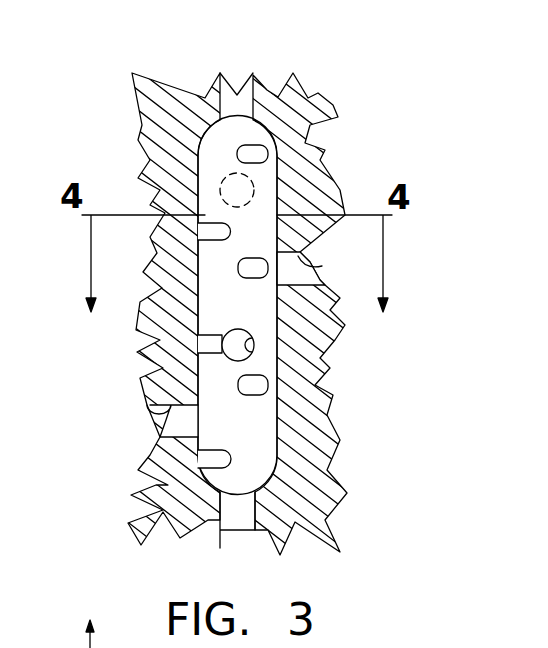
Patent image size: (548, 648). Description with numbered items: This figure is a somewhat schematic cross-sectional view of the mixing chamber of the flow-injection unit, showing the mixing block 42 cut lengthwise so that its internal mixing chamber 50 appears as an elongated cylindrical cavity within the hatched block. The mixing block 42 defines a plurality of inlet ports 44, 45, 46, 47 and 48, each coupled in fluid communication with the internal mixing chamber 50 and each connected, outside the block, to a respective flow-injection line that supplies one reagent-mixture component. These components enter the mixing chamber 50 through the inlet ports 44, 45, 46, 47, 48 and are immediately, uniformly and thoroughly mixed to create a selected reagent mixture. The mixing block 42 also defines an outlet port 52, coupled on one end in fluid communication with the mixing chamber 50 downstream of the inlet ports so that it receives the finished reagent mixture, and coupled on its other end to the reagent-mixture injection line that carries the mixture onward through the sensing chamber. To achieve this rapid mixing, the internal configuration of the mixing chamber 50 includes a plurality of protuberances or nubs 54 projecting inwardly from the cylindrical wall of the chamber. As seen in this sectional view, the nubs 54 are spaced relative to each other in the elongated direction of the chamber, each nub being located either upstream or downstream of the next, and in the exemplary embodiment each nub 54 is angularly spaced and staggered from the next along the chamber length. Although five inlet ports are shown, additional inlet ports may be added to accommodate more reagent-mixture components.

The mixing block 42 is at (307, 162).
The inlet port 44 is at (220, 548).
The inlet port 45 is at (252, 342).
The inlet port 46 is at (160, 408).
The inlet port 47 is at (222, 200).
The inlet port 48 is at (300, 258).
The internal mixing chamber 50 is at (197, 136).
The outlet port 52 is at (243, 80).
The protuberances or nubs 54 is at (213, 452).